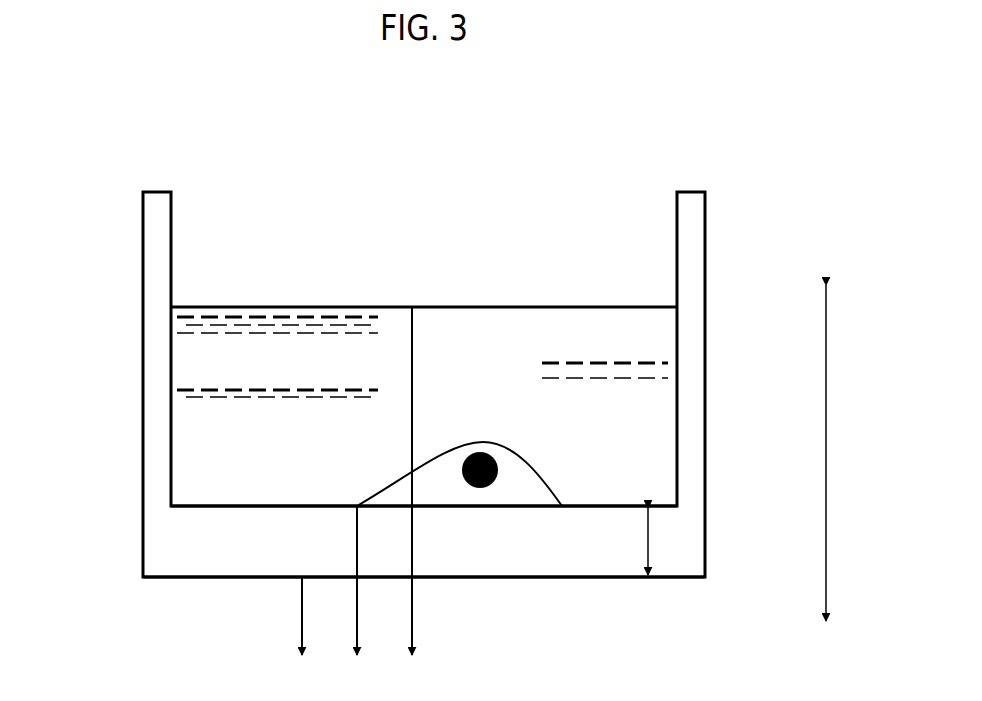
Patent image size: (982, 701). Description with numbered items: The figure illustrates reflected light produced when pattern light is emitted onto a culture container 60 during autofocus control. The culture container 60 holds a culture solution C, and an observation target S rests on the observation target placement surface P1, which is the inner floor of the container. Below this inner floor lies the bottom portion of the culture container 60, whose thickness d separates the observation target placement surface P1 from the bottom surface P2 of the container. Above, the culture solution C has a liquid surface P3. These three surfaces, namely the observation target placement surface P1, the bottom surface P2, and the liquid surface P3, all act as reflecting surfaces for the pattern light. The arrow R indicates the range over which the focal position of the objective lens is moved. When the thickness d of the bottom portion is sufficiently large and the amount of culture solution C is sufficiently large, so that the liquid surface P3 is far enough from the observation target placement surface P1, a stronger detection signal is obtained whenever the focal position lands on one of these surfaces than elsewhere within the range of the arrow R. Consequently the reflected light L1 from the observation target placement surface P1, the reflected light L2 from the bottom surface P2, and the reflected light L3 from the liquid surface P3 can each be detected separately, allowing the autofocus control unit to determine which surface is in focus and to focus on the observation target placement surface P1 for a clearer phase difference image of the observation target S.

The culture container 60 is at (143, 309).
The liquid surface of the culture solution P3 is at (577, 300).
The culture solution C is at (648, 334).
The observation target S is at (433, 475).
The reflected light from the observation target placement surface L1 is at (359, 598).
The reflected light from the bottom surface of the culture container L2 is at (304, 634).
The reflected light from the liquid surface L3 is at (414, 499).
The observation target placement surface P1 is at (193, 510).
The bottom surface of the culture container P2 is at (193, 582).
The thickness of the bottom portion of the culture container d is at (648, 543).
The arrow indicating the focal position moving range R is at (826, 449).